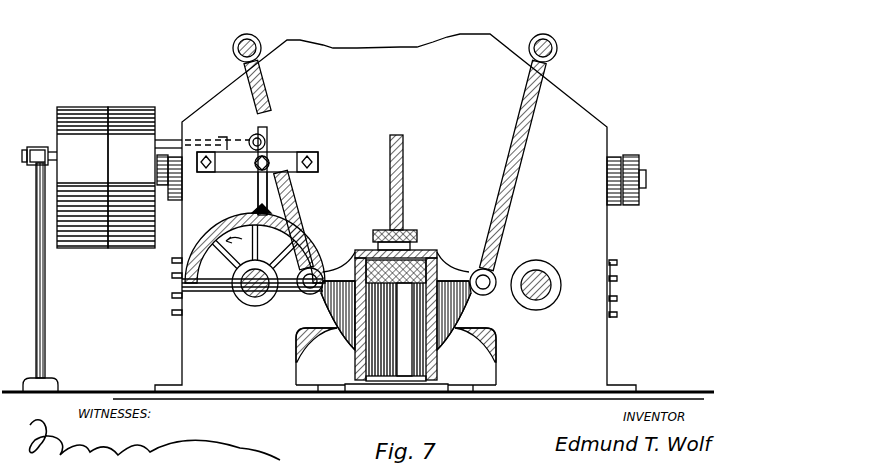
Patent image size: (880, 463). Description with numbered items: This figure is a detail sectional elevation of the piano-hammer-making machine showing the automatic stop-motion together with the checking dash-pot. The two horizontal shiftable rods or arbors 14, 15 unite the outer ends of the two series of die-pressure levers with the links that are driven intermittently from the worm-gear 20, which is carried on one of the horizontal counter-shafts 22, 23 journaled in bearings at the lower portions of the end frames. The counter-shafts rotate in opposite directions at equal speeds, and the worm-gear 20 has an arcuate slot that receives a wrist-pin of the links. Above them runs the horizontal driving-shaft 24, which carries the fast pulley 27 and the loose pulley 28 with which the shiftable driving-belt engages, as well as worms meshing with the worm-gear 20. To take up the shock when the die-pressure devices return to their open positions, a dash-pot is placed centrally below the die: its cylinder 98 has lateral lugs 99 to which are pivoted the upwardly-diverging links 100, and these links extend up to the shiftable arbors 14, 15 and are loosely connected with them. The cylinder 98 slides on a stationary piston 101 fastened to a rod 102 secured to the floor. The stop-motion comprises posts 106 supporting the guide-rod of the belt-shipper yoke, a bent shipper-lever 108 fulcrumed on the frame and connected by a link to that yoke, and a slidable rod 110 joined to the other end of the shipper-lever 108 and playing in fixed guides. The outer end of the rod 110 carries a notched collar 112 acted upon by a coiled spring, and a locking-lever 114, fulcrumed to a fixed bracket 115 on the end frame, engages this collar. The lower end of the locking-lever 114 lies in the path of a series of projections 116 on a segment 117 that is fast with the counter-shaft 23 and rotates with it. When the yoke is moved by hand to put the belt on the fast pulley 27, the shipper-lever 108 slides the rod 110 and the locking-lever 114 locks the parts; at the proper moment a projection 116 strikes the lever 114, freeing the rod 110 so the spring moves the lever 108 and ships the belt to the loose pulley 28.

The shiftable rod 14 is at (258, 36).
The shiftable rod 15 is at (557, 47).
The worm-gear 20 is at (315, 347).
The counter-shaft 22 is at (551, 281).
The counter-shaft 23 is at (253, 300).
The driving-shaft 24 is at (647, 178).
The fast pulley 27 is at (133, 248).
The loose pulley 28 is at (97, 248).
The dash-pot cylinder 98 is at (436, 257).
The lateral lugs 99 is at (332, 306).
The upwardly-diverging links 100 is at (294, 193).
The stationary piston 101 is at (382, 272).
The rod 102 is at (400, 354).
The posts 106 is at (45, 298).
The bent shipper-lever 108 is at (170, 137).
The slidable rod 110 is at (251, 137).
The notched collar 112 is at (255, 163).
The locking-lever 114 is at (265, 127).
The fixed bracket 115 is at (280, 158).
The projections 116 is at (259, 210).
The segment 117 is at (205, 292).